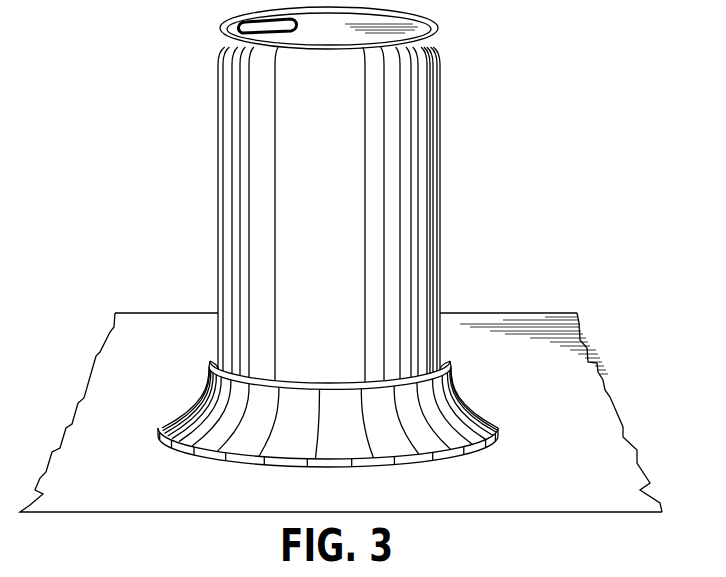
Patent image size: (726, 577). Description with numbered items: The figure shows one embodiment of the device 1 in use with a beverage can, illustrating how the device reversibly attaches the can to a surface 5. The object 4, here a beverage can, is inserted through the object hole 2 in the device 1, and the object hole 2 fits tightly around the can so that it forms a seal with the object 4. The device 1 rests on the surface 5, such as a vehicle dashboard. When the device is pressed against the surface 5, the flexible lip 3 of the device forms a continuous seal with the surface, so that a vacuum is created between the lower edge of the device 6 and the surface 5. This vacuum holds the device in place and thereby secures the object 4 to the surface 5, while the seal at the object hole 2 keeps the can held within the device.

The device 1 is at (227, 408).
The object hole 2 is at (373, 380).
The flexible lip 3 is at (505, 422).
The object 4 is at (423, 135).
The surface 5 is at (167, 328).
The lower edge of the device 6 is at (408, 468).